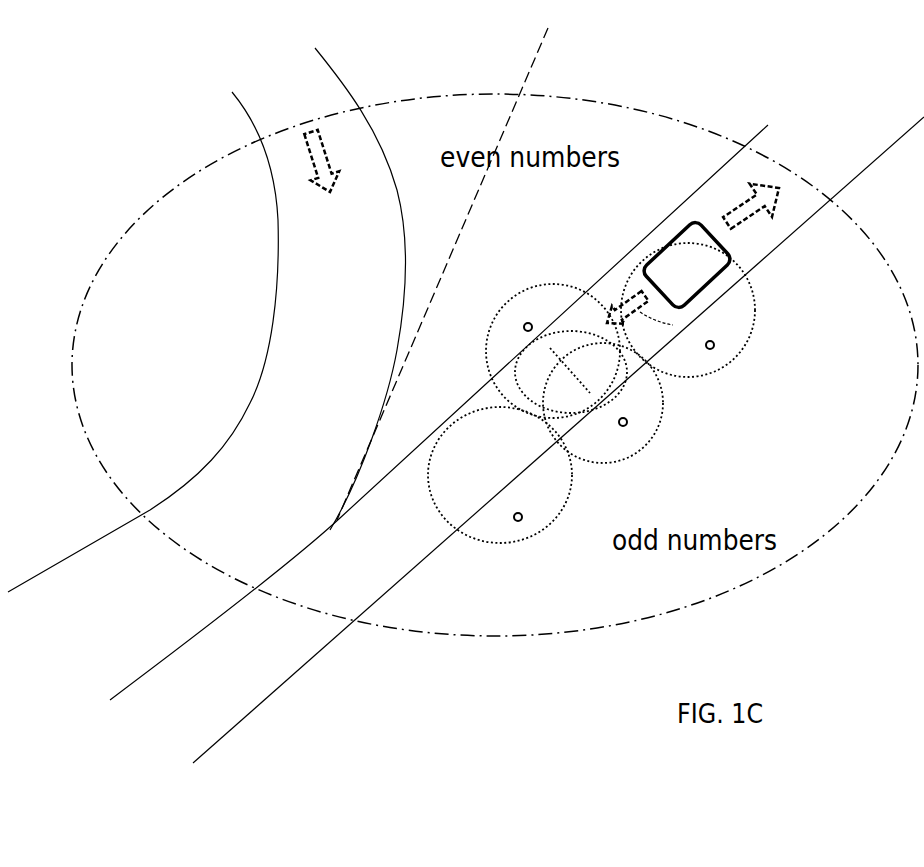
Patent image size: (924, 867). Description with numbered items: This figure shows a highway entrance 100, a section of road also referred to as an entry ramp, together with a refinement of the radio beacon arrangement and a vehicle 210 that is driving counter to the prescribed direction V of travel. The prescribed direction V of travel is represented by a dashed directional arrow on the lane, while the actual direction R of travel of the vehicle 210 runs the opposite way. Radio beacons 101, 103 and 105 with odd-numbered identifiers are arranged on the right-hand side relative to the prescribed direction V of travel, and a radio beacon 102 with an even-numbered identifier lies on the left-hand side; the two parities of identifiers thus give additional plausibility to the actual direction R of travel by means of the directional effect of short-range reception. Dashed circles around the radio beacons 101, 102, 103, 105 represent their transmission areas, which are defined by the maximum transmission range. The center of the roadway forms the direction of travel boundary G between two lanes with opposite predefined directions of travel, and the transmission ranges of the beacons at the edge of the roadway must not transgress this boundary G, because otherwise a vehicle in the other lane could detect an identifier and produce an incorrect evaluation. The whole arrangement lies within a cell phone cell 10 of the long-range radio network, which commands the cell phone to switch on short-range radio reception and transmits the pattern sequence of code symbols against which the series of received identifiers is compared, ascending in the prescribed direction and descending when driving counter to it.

The cell phone cell 10 is at (495, 365).
The highway entrance 100 is at (517, 440).
The radio beacon 101 is at (509, 494).
The radio beacon 102 is at (550, 346).
The radio beacon 103 is at (615, 415).
The radio beacon 105 is at (701, 327).
The vehicle 210 is at (687, 264).
The direction of travel boundary G is at (494, 274).
The prescribed direction of travel V is at (804, 201).
The actual direction of travel R is at (694, 313).